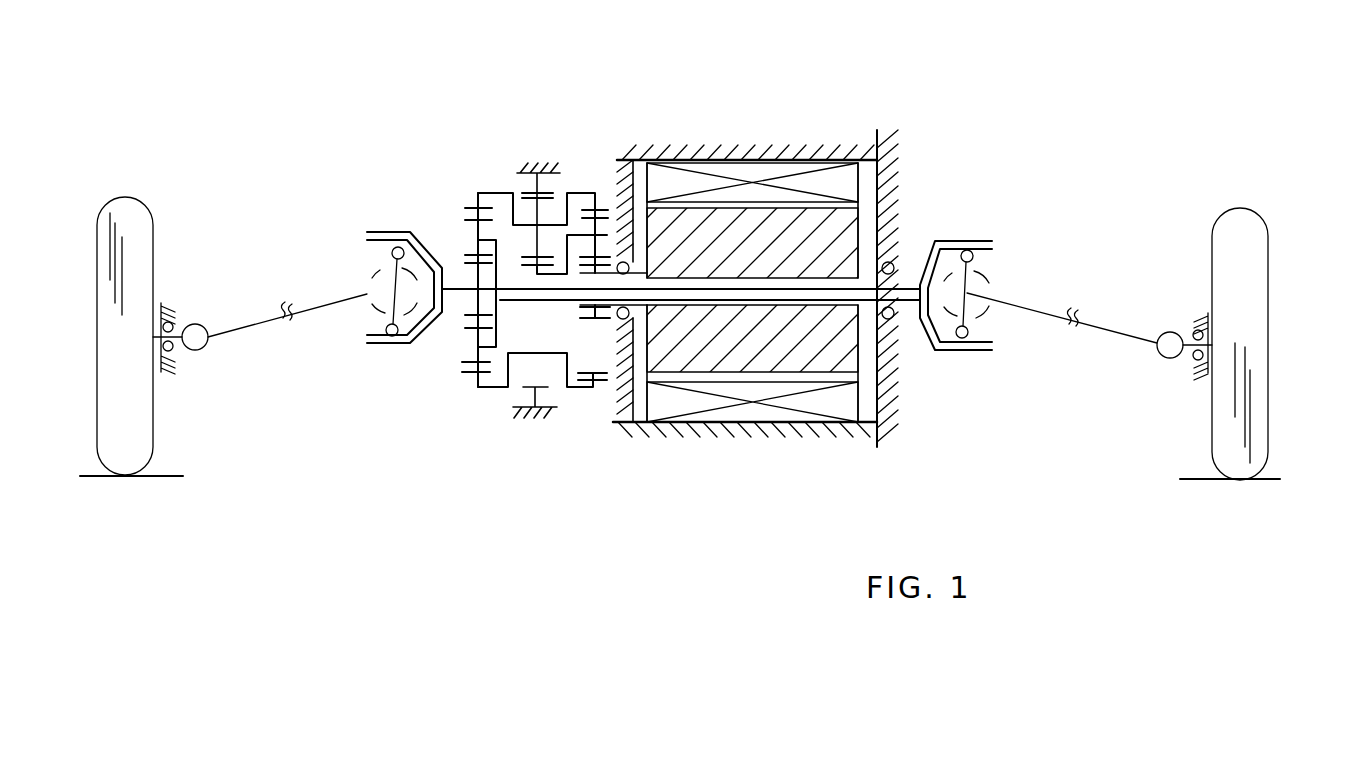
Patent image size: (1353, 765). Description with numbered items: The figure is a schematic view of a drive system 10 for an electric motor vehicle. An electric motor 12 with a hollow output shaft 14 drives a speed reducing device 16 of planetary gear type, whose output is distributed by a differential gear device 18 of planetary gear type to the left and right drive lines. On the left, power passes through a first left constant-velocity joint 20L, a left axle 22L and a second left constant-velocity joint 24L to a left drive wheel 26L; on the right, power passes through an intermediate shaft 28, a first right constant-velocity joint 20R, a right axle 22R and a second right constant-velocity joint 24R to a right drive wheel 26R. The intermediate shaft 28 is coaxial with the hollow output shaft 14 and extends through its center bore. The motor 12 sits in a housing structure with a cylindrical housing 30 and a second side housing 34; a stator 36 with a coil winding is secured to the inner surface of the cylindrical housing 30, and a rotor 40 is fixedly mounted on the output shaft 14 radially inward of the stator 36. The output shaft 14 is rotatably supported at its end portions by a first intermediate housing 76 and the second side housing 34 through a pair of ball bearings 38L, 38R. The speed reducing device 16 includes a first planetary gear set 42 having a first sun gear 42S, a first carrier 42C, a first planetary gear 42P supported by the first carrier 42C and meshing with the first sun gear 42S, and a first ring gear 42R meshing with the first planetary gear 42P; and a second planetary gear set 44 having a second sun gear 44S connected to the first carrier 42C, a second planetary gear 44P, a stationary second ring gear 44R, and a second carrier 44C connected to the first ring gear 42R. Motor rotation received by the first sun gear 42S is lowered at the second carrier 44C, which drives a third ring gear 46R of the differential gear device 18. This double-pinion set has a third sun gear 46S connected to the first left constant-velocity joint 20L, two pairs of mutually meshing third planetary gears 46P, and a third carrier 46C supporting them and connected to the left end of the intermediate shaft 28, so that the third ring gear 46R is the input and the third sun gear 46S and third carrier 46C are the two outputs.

The drive system 10 is at (396, 62).
The electric motor 12 is at (695, 460).
The hollow output shaft 14 is at (672, 304).
The speed reducing device 16 is at (633, 473).
The differential gear device 18 is at (473, 428).
The first left constant-velocity joint 20L is at (376, 363).
The first right constant-velocity joint 20R is at (973, 370).
The left axle 22L is at (267, 323).
The right axle 22R is at (1108, 332).
The second left constant-velocity joint 24L is at (197, 325).
The second right constant-velocity joint 24R is at (1171, 331).
The left drive wheel 26L is at (145, 222).
The right drive wheel 26R is at (1230, 222).
The intermediate shaft 28 is at (768, 288).
The cylindrical housing 30 is at (742, 150).
The second side housing 34 is at (892, 150).
The stator 36 is at (835, 180).
The ball bearing 38L is at (653, 272).
The ball bearing 38R is at (889, 320).
The rotor 40 is at (828, 345).
The first planetary gear set 42 is at (589, 148).
The first planetary gear 42P is at (600, 192).
The first carrier 42C is at (572, 264).
The first ring gear 42R is at (597, 380).
The first sun gear 42S is at (610, 360).
The second planetary gear set 44 is at (520, 150).
The second planetary gear 44P is at (520, 196).
The second carrier 44C is at (480, 193).
The second ring gear 44R is at (522, 383).
The second sun gear 44S is at (522, 270).
The third ring gear 46R is at (468, 207).
The third planetary gears 46P is at (462, 225).
The third carrier 46C is at (467, 237).
The third sun gear 46S is at (477, 363).
The first intermediate housing 76 is at (618, 183).